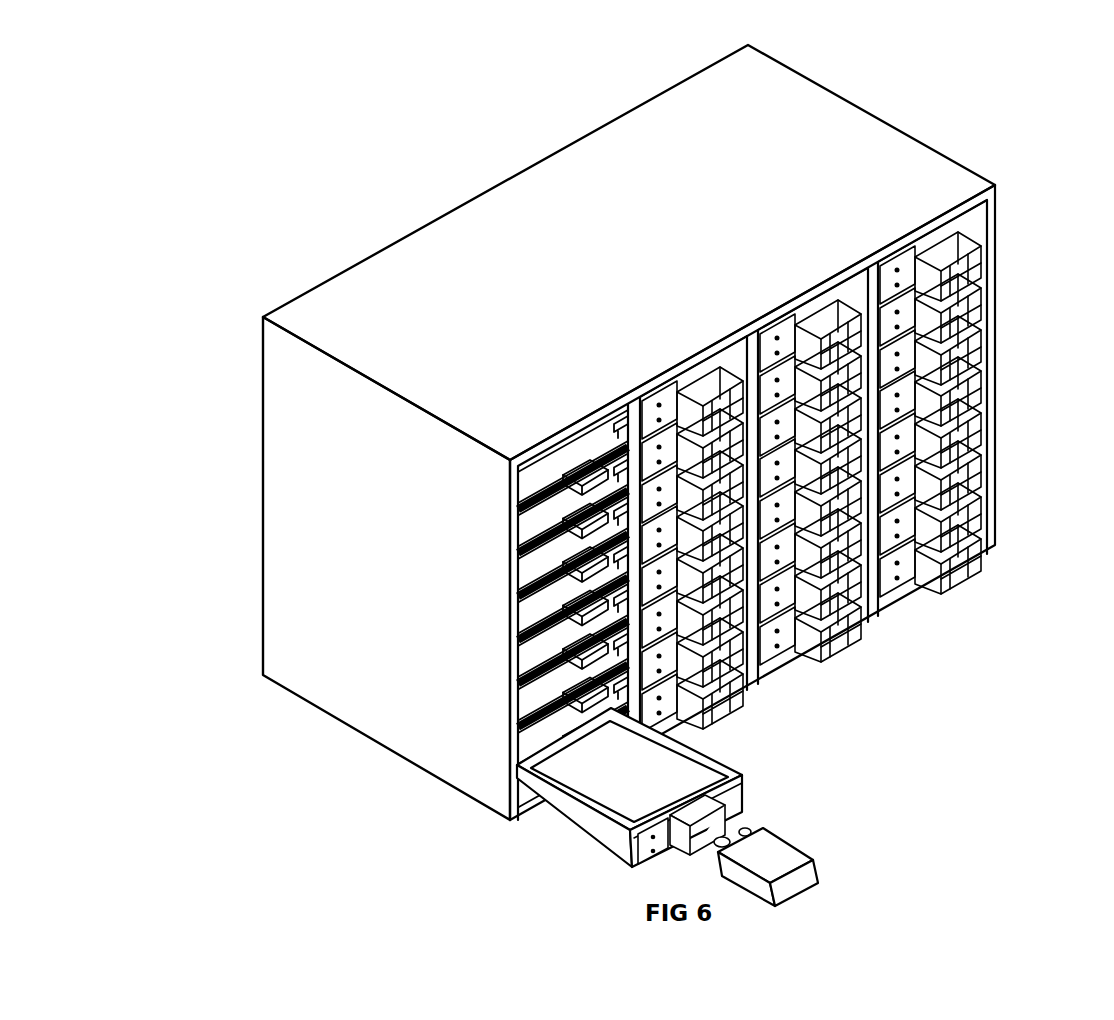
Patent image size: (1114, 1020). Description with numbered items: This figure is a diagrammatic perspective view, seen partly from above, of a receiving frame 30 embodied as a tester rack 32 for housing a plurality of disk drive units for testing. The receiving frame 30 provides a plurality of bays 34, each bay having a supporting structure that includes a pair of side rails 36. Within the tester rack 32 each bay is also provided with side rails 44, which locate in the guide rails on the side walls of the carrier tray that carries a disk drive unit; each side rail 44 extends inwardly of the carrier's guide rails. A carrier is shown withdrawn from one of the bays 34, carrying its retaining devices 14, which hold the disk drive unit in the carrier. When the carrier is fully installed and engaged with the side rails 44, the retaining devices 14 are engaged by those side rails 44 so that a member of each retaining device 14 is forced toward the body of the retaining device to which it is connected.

The receiving frame 30 is at (390, 225).
The tester rack 32 is at (882, 118).
The bays 34 is at (548, 458).
The side rails 36 is at (607, 421).
The side rails 44 is at (608, 556).
The retaining devices 14 is at (590, 835).